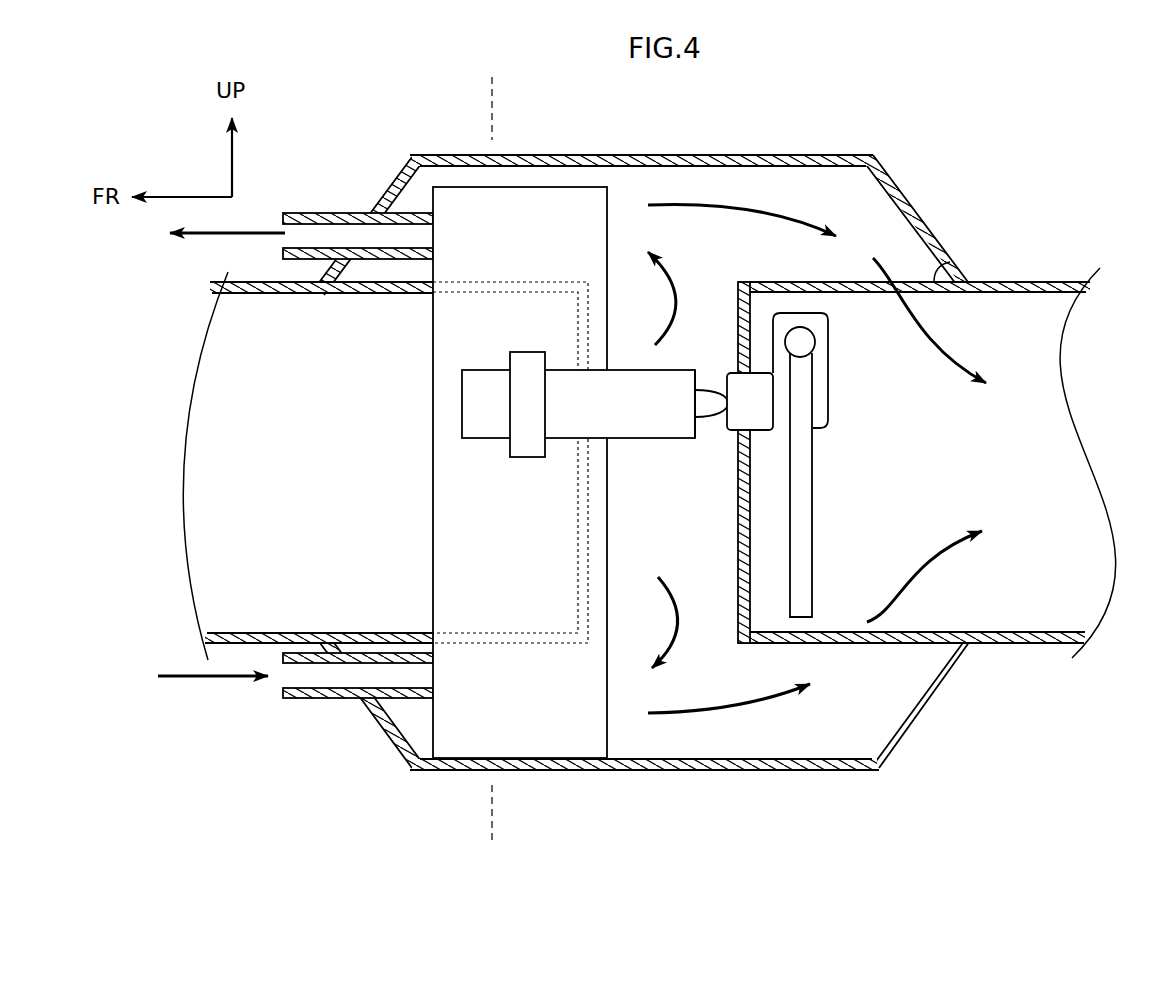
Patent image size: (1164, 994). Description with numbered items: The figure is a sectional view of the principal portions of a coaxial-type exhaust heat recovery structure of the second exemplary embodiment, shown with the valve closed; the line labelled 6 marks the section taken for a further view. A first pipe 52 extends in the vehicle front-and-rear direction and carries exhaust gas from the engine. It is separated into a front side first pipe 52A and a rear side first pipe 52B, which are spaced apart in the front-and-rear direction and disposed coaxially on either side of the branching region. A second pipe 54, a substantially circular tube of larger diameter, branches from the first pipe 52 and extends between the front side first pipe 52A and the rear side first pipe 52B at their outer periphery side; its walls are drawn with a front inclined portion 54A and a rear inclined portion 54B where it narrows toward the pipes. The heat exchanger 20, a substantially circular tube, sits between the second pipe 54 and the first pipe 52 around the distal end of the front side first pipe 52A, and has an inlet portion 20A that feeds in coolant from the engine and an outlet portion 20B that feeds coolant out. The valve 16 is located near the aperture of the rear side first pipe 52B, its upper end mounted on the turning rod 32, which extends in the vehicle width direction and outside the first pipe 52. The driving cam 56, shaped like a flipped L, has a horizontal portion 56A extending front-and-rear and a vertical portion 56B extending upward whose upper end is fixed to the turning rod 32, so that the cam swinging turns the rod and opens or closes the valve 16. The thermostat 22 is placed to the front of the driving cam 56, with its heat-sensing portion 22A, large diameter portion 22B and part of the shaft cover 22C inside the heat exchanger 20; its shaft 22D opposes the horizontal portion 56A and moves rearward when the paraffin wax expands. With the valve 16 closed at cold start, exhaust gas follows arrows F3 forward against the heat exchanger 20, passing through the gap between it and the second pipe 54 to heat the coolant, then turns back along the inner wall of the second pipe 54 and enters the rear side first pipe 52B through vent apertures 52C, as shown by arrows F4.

The section line (FIG. 6) 6 is at (500, 83).
The valve 16 is at (815, 525).
The heat exchanger 20 is at (591, 184).
The inlet portion 20A is at (312, 705).
The outlet portion 20B is at (308, 212).
The thermostat 22 is at (548, 383).
The heat-sensing portion 22A is at (462, 405).
The large diameter portion 22B is at (512, 447).
The shaft cover 22C is at (690, 440).
The shaft 22D is at (722, 378).
The turning rod 32 is at (816, 332).
The first pipe 52 is at (931, 405).
The front side first pipe 52A is at (388, 648).
The rear side first pipe 52B is at (926, 655).
The vent aperture 52C is at (947, 250).
The second pipe 54 is at (732, 774).
The upstream inclined wall 54A is at (372, 206).
The downstream inclined wall 54B is at (900, 182).
The driving cam 56 is at (819, 444).
The horizontal portion 56A is at (762, 433).
The vertical portion 56B is at (838, 372).
The arrows F3 is at (683, 316).
The arrows F4 is at (926, 332).